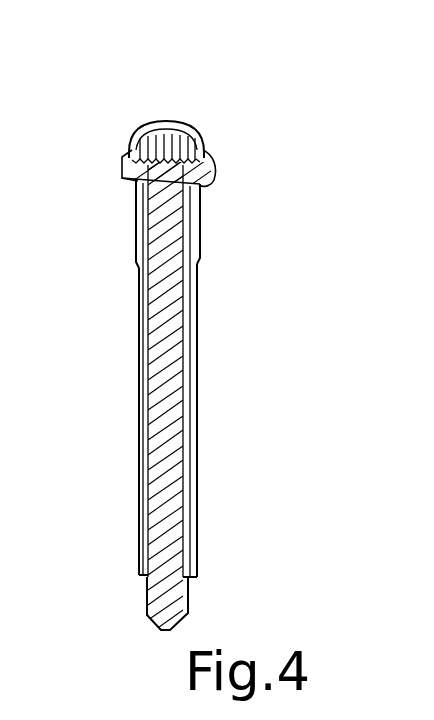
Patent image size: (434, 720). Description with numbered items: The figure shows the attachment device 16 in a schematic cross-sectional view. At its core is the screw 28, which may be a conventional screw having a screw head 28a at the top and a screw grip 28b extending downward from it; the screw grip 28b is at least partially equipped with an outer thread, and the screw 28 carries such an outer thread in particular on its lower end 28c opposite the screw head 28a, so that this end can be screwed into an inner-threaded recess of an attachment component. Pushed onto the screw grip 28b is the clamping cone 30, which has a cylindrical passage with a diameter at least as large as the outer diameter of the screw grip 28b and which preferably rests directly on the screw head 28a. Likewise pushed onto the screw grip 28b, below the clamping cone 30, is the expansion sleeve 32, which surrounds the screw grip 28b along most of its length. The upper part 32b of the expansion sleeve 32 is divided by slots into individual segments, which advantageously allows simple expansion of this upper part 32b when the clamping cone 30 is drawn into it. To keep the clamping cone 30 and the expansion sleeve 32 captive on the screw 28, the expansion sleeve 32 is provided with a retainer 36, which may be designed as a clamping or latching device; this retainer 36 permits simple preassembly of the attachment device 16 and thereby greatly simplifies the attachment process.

The attachment device 16 is at (131, 104).
The screw 28 is at (174, 112).
The screw head 28a is at (207, 142).
The screw grip 28b is at (170, 250).
The end of the screw 28c is at (186, 603).
The clamping cone 30 is at (137, 220).
The expansion sleeve 32 is at (138, 415).
The upper part of the expansion sleeve 32b is at (197, 303).
The retainer 36 is at (197, 571).